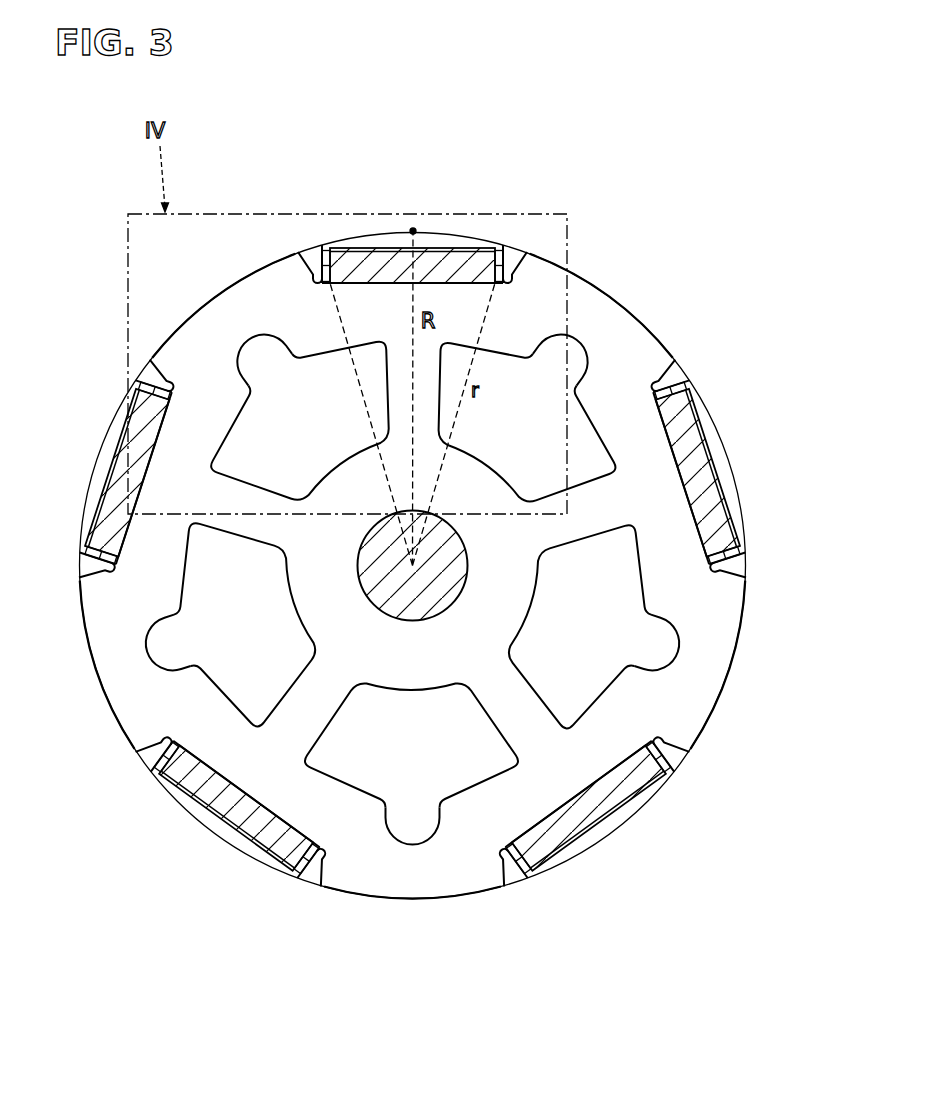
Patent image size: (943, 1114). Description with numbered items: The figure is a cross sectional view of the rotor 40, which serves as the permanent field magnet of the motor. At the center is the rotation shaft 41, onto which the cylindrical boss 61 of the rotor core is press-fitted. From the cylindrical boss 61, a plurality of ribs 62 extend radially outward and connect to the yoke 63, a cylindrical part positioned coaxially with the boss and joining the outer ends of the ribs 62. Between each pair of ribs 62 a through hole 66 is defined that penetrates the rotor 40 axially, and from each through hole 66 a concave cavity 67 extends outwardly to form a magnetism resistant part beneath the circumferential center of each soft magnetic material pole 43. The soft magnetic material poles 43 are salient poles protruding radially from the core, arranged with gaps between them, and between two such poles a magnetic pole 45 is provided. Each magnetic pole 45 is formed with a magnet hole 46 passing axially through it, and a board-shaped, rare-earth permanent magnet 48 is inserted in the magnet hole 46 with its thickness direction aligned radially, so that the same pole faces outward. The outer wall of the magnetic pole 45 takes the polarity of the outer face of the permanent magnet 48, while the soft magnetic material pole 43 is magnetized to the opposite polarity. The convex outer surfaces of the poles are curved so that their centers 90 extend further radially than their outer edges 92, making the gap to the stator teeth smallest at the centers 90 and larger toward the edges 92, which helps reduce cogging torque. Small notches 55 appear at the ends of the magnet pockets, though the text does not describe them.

The rotor 40 is at (606, 222).
The rotation shaft 41 is at (445, 598).
The soft magnetic material pole 43 is at (230, 283).
The magnetic pole 45 is at (415, 258).
The magnet hole 46 is at (428, 258).
The permanent magnet 48 is at (452, 263).
The notch 55 is at (312, 268).
The cylindrical boss 61 is at (295, 600).
The rib 62 is at (424, 365).
The yoke 63 is at (393, 300).
The through hole 66 is at (352, 300).
The concave cavity 67 is at (257, 360).
The center 90 is at (413, 228).
The outer edge 92 is at (324, 250).